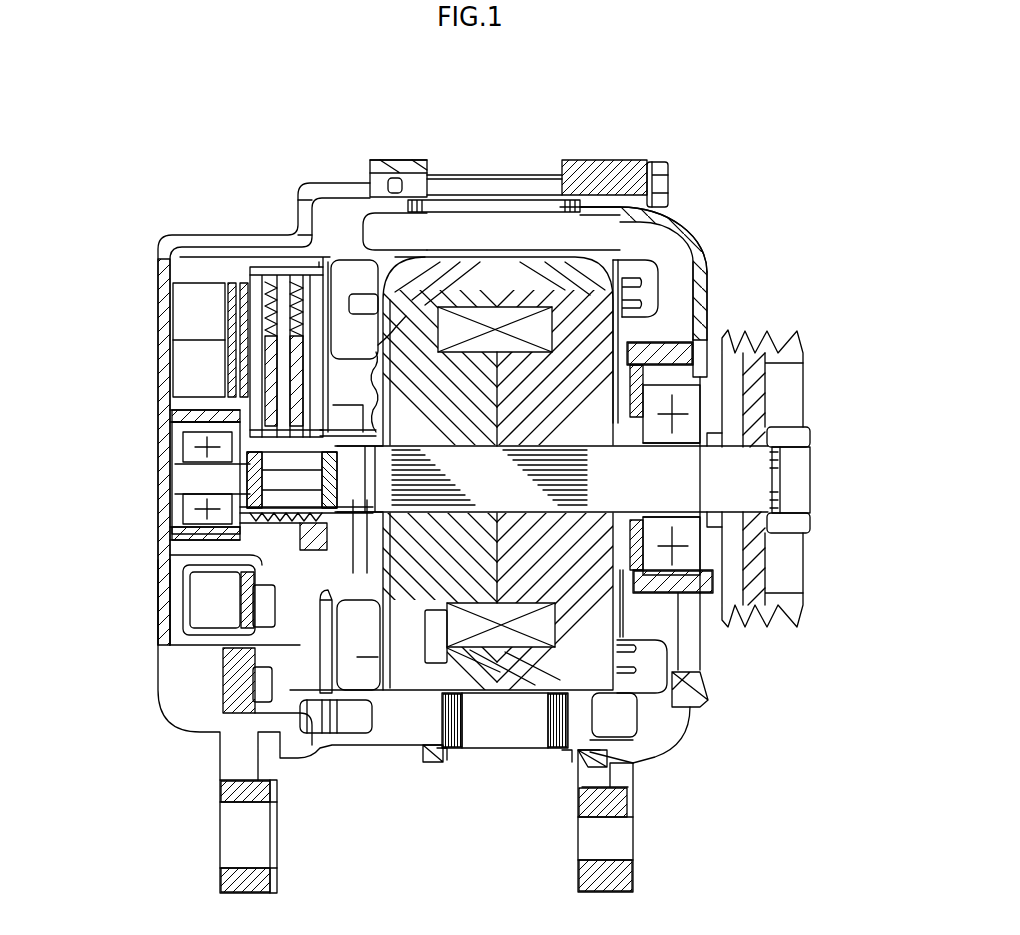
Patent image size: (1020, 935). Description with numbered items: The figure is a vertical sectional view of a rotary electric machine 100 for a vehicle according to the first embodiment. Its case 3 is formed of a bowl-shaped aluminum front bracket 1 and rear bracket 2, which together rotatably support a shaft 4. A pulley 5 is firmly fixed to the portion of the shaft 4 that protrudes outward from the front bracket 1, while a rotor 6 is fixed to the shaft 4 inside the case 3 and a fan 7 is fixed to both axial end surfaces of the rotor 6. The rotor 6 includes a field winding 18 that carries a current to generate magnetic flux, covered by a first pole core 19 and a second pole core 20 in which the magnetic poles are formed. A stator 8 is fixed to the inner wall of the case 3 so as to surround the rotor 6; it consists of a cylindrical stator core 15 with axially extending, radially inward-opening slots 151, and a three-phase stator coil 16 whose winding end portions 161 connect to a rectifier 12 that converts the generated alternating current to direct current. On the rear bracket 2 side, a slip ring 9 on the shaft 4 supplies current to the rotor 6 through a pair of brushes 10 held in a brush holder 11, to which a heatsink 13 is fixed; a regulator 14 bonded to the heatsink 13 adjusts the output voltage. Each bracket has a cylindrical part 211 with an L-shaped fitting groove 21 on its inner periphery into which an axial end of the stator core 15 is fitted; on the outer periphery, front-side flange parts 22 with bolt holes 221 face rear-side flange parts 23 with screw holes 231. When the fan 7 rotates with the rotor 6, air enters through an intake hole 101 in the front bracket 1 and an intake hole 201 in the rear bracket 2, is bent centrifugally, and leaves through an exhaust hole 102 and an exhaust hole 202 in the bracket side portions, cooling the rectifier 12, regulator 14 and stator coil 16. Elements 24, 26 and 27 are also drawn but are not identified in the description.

The rotary electric machine for a vehicle 100 is at (198, 121).
The front bracket 1 is at (713, 683).
The rear bracket 2 is at (185, 735).
The case 3 is at (718, 711).
The shaft 4 is at (748, 483).
The pulley 5 is at (808, 352).
The rotor 6 is at (497, 383).
The fan 7 is at (652, 283).
The stator 8 is at (512, 770).
The slip ring 9 is at (245, 405).
The brushes 10 is at (225, 345).
The brush holder 11 is at (243, 275).
The rectifier 12 is at (232, 640).
The heatsink 13 is at (213, 327).
The regulator 14 is at (223, 317).
The stator core 15 is at (483, 733).
The stator coil 16 is at (583, 723).
The field winding 18 is at (487, 315).
The first pole core 19 is at (545, 283).
The second pole core 20 is at (415, 283).
The fitting groove 21 is at (433, 753).
The front-side flange parts 22 is at (597, 157).
The rear-side flange parts 23 is at (382, 158).
The bolt head 24 is at (670, 183).
The front mounting foot 26 is at (633, 870).
The rear mounting foot 27 is at (228, 873).
The intake hole 101 is at (702, 312).
The exhaust hole 102 is at (678, 212).
The slots 151 is at (432, 250).
The winding end portions 161 is at (347, 733).
The intake hole 201 is at (170, 602).
The exhaust hole 202 is at (325, 197).
The cylindrical part 211 is at (440, 753).
The bolt hole 221 is at (622, 160).
The screw hole 231 is at (407, 158).